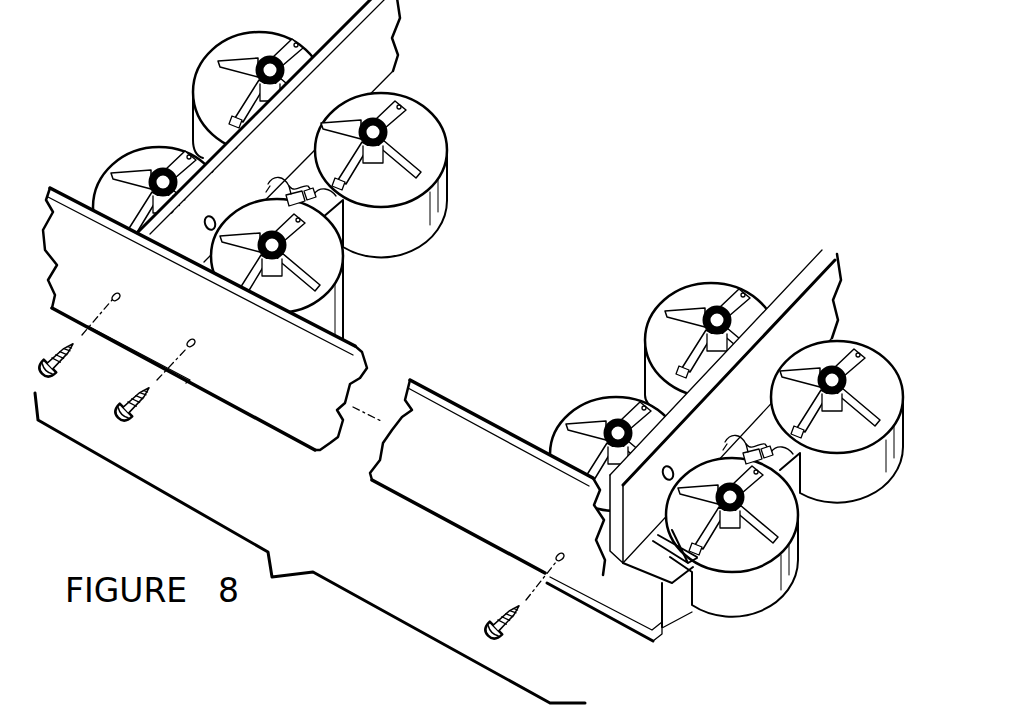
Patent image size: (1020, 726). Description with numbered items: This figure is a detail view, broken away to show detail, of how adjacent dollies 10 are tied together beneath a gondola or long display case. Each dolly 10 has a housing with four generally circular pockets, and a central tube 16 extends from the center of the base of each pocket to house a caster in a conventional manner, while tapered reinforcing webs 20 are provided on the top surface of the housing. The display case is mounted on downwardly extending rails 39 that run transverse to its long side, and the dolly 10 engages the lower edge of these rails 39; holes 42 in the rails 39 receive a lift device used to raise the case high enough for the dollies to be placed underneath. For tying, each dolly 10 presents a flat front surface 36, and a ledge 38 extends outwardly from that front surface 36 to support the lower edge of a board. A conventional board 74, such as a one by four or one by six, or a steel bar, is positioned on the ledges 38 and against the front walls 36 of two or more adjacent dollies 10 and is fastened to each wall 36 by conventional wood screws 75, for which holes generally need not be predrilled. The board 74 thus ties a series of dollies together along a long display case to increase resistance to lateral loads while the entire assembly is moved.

The dolly 10 is at (492, 308).
The central tube 16 is at (157, 167).
The tapered reinforcing webs 20 is at (237, 62).
The front surface 36 is at (655, 600).
The ledge 38 is at (633, 617).
The rails 39 is at (378, 44).
The holes 42 is at (208, 233).
The board 74 is at (277, 387).
The wood screws 75 is at (58, 352).